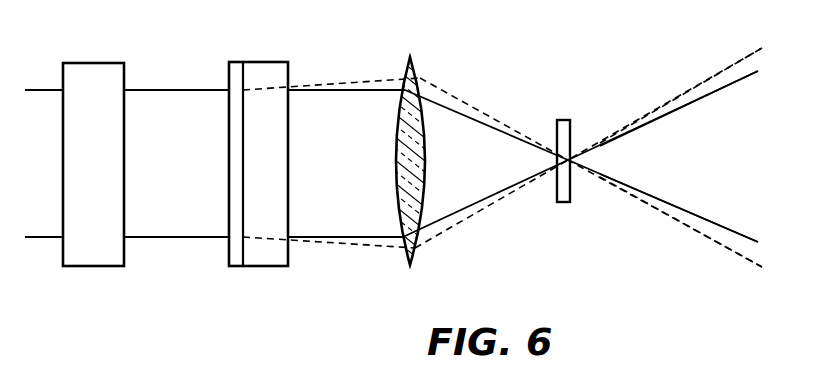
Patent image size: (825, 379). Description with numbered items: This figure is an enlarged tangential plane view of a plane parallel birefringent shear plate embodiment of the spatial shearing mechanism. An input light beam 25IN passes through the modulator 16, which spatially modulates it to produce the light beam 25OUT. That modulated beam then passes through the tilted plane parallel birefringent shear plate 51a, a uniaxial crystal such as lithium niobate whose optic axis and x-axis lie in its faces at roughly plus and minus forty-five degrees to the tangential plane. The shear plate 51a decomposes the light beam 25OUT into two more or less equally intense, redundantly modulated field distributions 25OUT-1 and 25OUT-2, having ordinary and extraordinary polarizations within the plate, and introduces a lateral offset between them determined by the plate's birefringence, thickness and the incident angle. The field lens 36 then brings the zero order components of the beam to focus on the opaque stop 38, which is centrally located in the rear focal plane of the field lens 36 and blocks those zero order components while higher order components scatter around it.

The modulator 16 is at (99, 62).
The plane parallel birefringent shear plate 51a is at (261, 60).
The field lens 36 is at (393, 85).
The opaque stop 38 is at (564, 118).
The input light beam 25IN is at (40, 115).
The spatially modulated light beam 25OUT is at (177, 110).
The first sheared field distribution 25OUT-1 is at (654, 128).
The second sheared field distribution 25OUT-2 is at (722, 84).